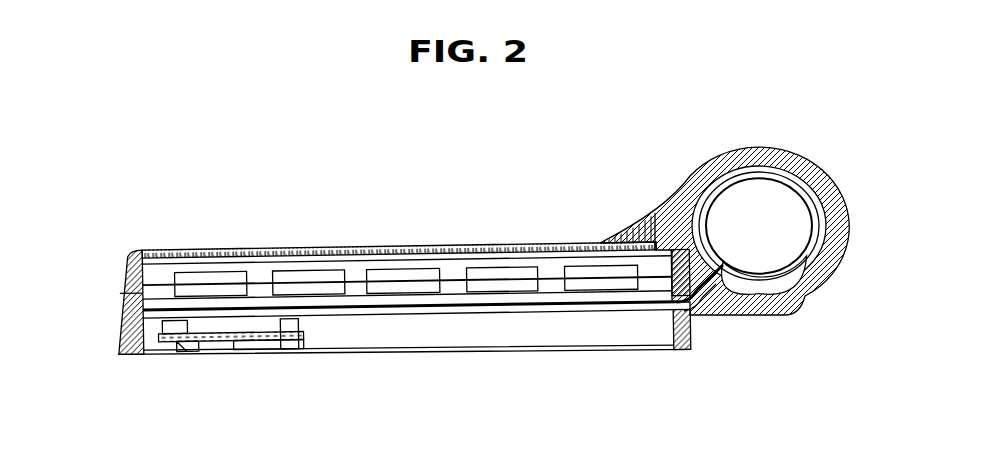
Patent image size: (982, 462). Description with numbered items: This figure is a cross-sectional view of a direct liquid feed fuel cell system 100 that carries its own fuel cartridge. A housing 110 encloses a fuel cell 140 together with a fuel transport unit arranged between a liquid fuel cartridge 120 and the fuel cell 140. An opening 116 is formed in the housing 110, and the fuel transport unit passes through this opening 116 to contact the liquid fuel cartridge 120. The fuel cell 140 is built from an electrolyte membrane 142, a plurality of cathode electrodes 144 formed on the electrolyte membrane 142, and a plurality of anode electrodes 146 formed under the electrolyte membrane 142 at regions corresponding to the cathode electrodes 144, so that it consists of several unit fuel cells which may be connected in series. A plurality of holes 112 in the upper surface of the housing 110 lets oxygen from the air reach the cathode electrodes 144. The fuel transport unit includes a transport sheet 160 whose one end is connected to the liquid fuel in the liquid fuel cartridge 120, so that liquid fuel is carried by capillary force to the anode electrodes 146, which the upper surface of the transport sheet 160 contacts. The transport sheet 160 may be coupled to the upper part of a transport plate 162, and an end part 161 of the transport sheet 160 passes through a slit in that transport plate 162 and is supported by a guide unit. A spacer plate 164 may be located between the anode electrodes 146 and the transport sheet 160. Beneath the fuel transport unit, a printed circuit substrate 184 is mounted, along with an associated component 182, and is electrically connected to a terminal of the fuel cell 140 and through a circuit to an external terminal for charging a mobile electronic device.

The portable terminal 100 is at (405, 233).
The housing 110 is at (688, 205).
The holes 112 is at (195, 246).
The opening 116 is at (700, 304).
The liquid fuel cartridge 120 is at (740, 212).
The fuel cell 140 is at (409, 358).
The electrolyte membrane 142 is at (357, 302).
The cathode electrodes 144 is at (316, 297).
The anode electrodes 146 is at (401, 288).
The transport sheet 160 is at (603, 315).
The end part 161 is at (724, 267).
The transport plate 162 is at (541, 315).
The spacer plate 164 is at (645, 298).
The clip 182 is at (178, 352).
The printed circuit substrate 184 is at (238, 349).